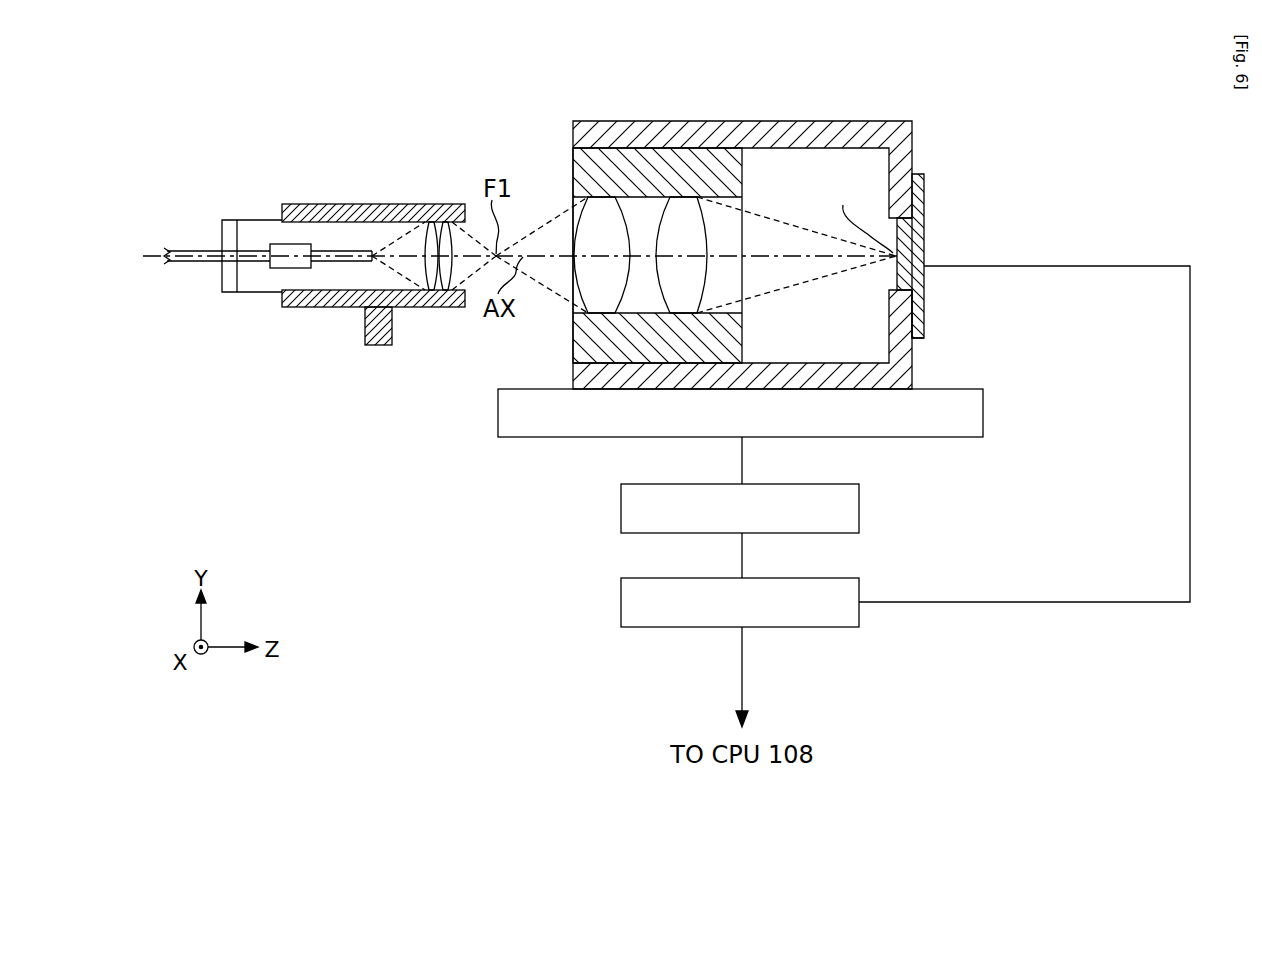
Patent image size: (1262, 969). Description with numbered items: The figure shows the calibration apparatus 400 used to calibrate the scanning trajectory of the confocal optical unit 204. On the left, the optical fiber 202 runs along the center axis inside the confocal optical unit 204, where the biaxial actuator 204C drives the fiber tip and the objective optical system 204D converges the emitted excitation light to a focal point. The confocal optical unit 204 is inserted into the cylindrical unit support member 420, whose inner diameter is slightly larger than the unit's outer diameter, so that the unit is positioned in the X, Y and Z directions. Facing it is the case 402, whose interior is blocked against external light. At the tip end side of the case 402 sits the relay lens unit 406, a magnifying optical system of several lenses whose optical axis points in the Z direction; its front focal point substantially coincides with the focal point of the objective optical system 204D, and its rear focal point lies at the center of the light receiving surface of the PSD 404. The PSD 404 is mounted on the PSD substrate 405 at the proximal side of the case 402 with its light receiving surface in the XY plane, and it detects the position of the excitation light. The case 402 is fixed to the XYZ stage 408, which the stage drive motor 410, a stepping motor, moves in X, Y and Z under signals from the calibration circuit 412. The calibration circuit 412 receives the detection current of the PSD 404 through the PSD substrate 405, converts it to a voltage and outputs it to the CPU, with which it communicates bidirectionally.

The optical fiber 202 is at (181, 263).
The confocal optical unit 204 is at (326, 268).
The biaxial actuator 204C is at (288, 243).
The objective optical system 204D is at (417, 232).
The unit support member 420 is at (315, 308).
The calibration apparatus 400 is at (742, 103).
The case 402 is at (855, 121).
The PSD 404 is at (927, 229).
The PSD substrate 405 is at (927, 329).
The relay lens unit 406 is at (573, 170).
The XYZ stage 408 is at (983, 412).
The stage drive motor 410 is at (859, 508).
The calibration circuit 412 is at (859, 614).